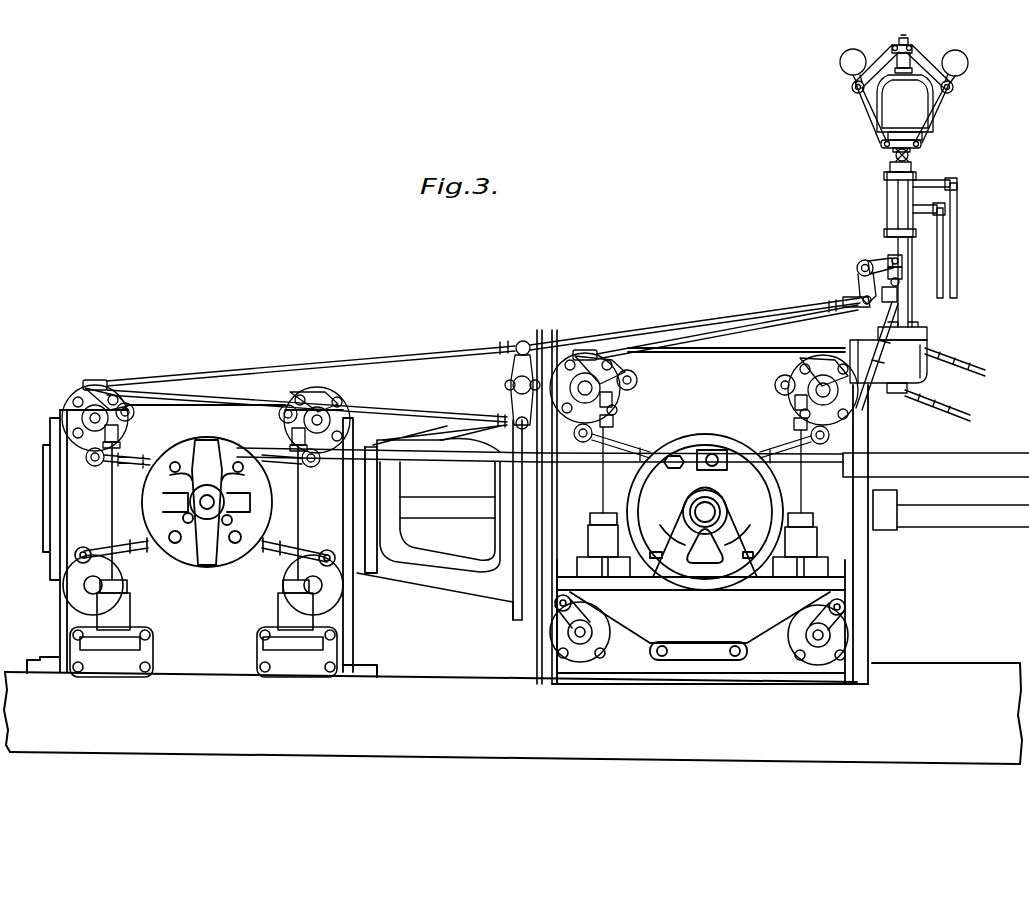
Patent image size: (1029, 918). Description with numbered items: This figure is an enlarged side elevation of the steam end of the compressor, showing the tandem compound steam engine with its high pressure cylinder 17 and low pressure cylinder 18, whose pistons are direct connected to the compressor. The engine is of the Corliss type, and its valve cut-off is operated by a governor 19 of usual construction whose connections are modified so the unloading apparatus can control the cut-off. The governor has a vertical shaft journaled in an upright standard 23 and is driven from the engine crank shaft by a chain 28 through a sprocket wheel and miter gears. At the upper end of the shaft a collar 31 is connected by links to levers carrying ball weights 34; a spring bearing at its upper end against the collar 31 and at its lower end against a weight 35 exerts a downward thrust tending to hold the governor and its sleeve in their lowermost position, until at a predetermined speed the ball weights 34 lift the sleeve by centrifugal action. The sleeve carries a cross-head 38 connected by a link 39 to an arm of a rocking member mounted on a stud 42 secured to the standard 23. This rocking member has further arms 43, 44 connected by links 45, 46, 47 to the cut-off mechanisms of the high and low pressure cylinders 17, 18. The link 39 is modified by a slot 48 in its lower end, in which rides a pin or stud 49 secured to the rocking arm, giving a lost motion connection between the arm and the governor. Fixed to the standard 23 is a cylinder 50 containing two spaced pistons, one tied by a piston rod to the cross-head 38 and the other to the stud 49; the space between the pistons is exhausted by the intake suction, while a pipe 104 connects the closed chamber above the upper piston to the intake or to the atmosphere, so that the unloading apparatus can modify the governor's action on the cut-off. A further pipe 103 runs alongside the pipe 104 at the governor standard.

The high pressure cylinder 17 is at (226, 396).
The low pressure cylinder 18 is at (760, 367).
The governor 19 is at (908, 96).
The upright standard 23 is at (905, 284).
The chain 28 is at (965, 367).
The collar 31 is at (910, 46).
The ball weights 34 is at (839, 58).
The weight 35 is at (893, 107).
The cross-head 38 is at (912, 155).
The link 39 is at (890, 192).
The stud 42 is at (858, 266).
The arm 43 is at (883, 258).
The arm 44 is at (862, 286).
The link 45 is at (878, 326).
The link 46 is at (820, 316).
The link 47 is at (648, 333).
The slot 48 is at (903, 257).
The pin or stud 49 is at (903, 271).
The cylinder 50 is at (888, 221).
The pipe 103 is at (947, 264).
The pipe 104 is at (958, 225).